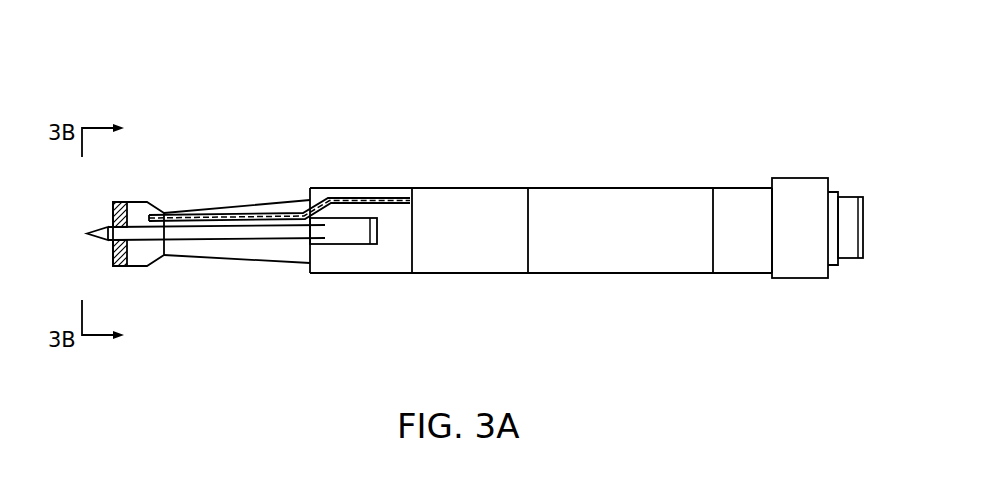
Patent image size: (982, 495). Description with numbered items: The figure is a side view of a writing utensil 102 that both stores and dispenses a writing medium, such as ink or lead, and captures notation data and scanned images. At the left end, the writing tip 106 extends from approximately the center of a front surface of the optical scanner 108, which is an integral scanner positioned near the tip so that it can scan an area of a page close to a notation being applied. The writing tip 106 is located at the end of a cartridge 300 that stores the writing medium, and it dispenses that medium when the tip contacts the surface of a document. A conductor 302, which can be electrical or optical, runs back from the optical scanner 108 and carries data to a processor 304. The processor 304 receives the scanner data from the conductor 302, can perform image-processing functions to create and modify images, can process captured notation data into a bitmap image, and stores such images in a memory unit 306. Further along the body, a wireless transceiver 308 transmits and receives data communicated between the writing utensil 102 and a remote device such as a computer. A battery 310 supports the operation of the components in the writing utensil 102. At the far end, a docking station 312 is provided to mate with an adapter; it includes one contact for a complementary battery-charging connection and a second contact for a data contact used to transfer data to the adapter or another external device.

The writing utensil 102 is at (588, 58).
The writing tip 106 is at (93, 231).
The optical scanner 108 is at (128, 267).
The cartridge 300 is at (270, 242).
The conductor 302 is at (360, 198).
The processor 304 is at (471, 243).
The memory unit 306 is at (621, 242).
The wireless transceiver 308 is at (744, 242).
The battery 310 is at (798, 242).
The docking station 312 is at (849, 196).